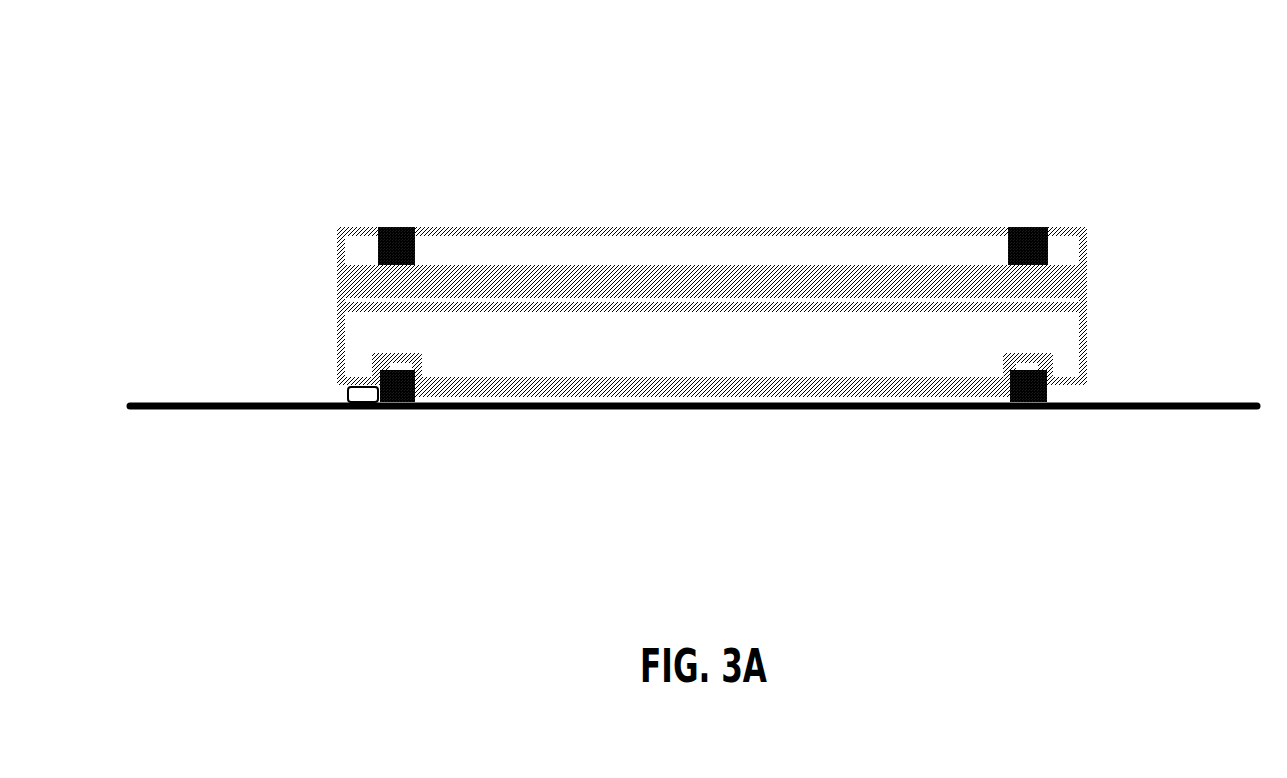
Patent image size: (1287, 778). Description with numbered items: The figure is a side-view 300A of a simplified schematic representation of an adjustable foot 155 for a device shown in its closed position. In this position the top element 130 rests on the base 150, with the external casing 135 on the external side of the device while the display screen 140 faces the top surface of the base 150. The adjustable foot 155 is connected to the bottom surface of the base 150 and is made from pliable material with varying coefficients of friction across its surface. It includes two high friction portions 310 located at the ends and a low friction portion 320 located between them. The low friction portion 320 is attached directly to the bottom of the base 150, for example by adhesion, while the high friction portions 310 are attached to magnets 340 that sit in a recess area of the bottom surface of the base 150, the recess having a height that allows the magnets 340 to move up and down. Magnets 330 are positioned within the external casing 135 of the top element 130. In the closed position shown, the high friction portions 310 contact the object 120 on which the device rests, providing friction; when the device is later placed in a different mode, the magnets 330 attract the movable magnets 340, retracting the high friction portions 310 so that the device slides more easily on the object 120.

The side-view 300A is at (258, 70).
The object 120 is at (1163, 403).
The top element 130 is at (695, 232).
The external casing 135 is at (822, 235).
The display screen 140 is at (337, 284).
The base 150 is at (337, 322).
The adjustable foot 155 is at (348, 394).
The high friction portions 310 is at (368, 410).
The low friction portion 320 is at (735, 392).
The magnets 330 is at (398, 227).
The magnets 340 is at (385, 360).